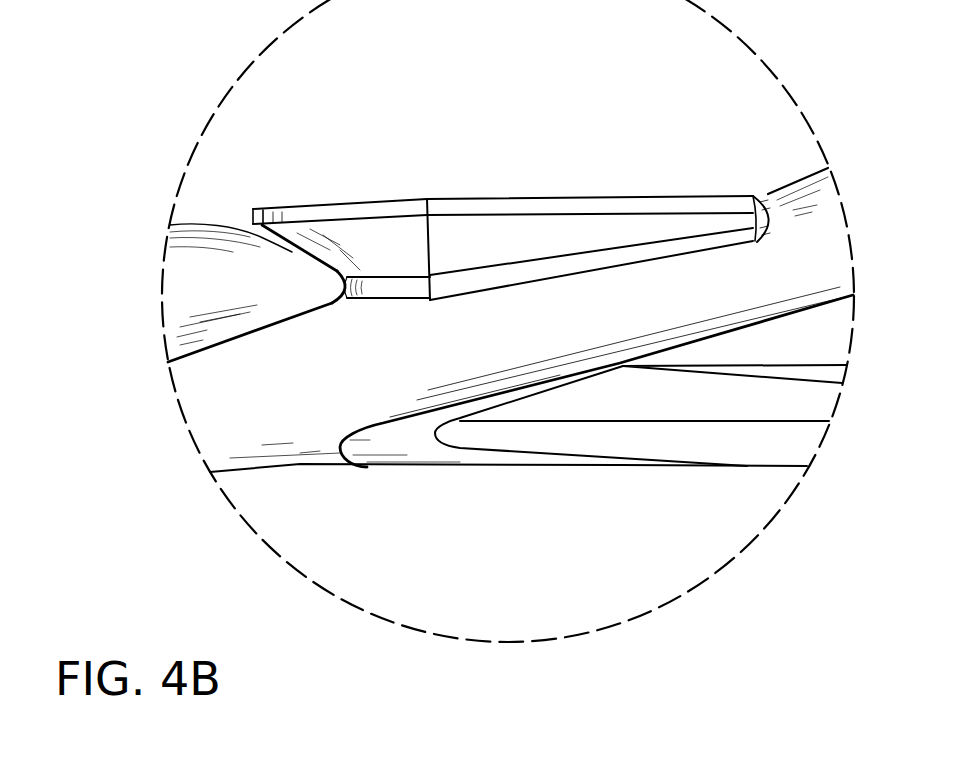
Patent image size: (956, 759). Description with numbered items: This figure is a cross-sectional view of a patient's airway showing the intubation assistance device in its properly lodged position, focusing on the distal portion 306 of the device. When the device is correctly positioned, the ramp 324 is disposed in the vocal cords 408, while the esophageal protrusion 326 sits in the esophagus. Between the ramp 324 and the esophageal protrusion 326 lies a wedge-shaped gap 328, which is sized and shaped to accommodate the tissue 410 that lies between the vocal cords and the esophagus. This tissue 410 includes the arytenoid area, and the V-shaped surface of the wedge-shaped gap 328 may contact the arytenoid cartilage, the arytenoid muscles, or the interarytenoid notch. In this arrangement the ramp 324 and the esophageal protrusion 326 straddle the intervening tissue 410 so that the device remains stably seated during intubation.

The distal portion 306 is at (288, 432).
The ramp 324 is at (354, 200).
The esophageal protrusion 326 is at (218, 400).
The wedge-shaped gap 328 is at (340, 287).
The vocal cords 408 is at (273, 157).
The tissue 410 is at (291, 278).